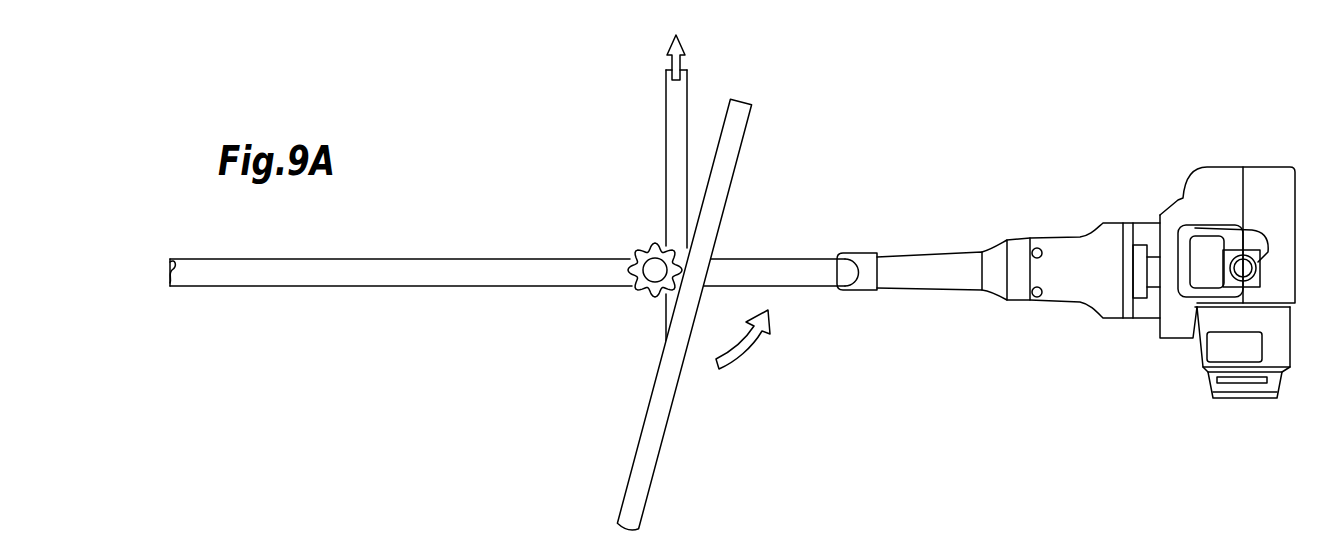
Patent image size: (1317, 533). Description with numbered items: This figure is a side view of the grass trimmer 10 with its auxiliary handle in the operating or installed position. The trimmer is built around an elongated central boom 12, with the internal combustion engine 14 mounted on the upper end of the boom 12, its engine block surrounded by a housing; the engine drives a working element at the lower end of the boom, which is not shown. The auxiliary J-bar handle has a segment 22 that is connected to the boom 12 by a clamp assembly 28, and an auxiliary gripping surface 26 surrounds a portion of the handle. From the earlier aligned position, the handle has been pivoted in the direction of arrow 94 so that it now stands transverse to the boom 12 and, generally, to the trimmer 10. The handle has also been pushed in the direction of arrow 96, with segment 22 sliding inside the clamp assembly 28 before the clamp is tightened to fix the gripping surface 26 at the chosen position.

The grass trimmer 10 is at (458, 187).
The boom 12 is at (518, 283).
The internal combustion engine 14 is at (1072, 200).
The segment 22 is at (673, 142).
The gripping surface 26 is at (727, 183).
The clamp assembly 28 is at (640, 238).
The arrow 94 is at (733, 362).
The arrow 96 is at (668, 63).